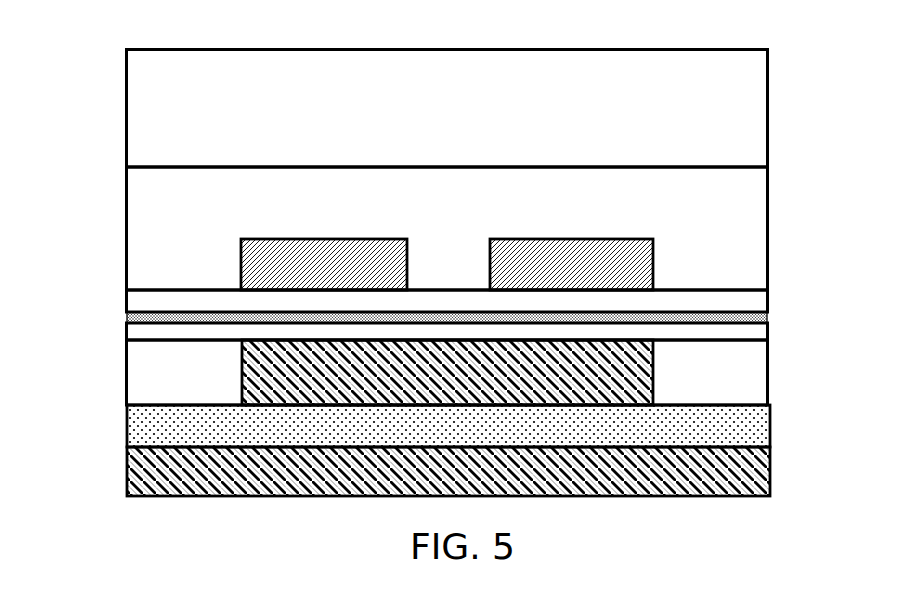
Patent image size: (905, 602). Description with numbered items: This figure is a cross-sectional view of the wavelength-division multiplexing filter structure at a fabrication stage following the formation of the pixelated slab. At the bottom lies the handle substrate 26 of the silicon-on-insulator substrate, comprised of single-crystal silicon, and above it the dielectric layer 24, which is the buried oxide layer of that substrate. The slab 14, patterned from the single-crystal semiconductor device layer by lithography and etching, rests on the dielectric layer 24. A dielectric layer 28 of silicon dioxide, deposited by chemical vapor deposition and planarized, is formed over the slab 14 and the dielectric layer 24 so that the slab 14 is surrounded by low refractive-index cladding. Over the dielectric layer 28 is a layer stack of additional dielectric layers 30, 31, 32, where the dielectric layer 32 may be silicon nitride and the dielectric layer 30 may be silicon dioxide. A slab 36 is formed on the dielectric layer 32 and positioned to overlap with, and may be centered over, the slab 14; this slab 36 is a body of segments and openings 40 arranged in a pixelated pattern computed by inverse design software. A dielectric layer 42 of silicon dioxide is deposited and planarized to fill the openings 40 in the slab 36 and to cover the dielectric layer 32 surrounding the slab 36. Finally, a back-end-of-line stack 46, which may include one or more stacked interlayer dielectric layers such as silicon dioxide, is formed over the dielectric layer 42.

The back-end-of-line stack 46 is at (168, 100).
The dielectric layer 42 is at (723, 225).
The slab 36 is at (258, 259).
The openings 40 is at (460, 278).
The dielectric layer 32 is at (148, 304).
The dielectric layer 31 is at (752, 321).
The dielectric layer 30 is at (146, 334).
The dielectric layer 28 is at (144, 373).
The slab 14 is at (655, 360).
The dielectric layer 24 is at (157, 433).
The handle substrate 26 is at (157, 480).